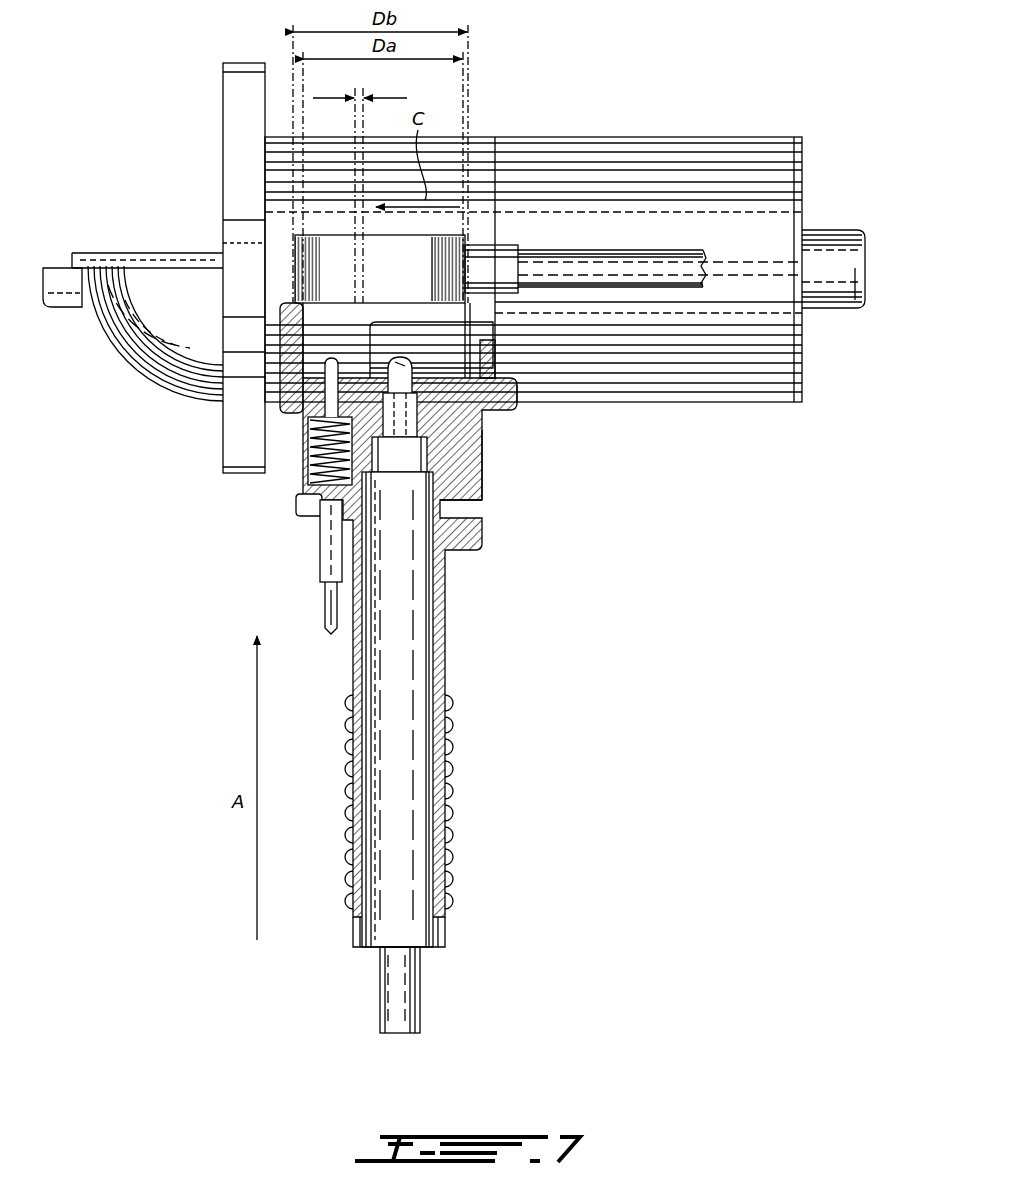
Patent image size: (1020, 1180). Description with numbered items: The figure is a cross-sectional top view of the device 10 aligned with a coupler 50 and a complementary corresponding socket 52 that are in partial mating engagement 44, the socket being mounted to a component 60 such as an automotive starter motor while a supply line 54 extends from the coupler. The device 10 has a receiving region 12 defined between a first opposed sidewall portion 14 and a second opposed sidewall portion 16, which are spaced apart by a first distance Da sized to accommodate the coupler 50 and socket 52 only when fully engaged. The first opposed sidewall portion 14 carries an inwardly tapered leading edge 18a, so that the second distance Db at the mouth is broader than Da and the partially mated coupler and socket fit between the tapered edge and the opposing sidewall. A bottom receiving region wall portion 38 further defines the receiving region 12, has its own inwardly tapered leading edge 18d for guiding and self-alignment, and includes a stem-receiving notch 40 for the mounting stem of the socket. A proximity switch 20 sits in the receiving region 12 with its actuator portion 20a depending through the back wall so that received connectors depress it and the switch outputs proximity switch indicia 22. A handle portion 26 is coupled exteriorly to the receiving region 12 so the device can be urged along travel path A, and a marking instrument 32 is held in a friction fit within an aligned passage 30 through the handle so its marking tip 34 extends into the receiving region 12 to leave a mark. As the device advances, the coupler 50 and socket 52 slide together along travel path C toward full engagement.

The device 10 is at (486, 767).
The receiving region 12 is at (278, 368).
The first opposed sidewall portion 14 is at (200, 380).
The second opposed sidewall portion 16 is at (483, 345).
The inwardly tapered leading edge 18a is at (313, 300).
The inwardly tapered leading edge 18d is at (507, 413).
The proximity switch 20 is at (328, 357).
The actuator portion 20a is at (300, 413).
The proximity switch indicia 22 is at (300, 500).
The handle portion 26 is at (455, 825).
The aligned passage 30 is at (483, 520).
The marking instrument 32 is at (420, 663).
The marking tip 34 is at (483, 470).
The bottom receiving region wall portion 38 is at (483, 430).
The stem-receiving notch 40 is at (280, 335).
The partial mating engagement 44 is at (360, 94).
The coupler 50 is at (443, 260).
The complementary corresponding socket 52 is at (315, 237).
The supply line 54 is at (627, 263).
The component 60 is at (757, 358).